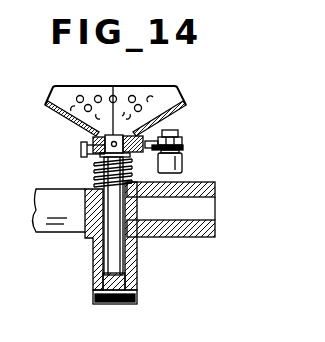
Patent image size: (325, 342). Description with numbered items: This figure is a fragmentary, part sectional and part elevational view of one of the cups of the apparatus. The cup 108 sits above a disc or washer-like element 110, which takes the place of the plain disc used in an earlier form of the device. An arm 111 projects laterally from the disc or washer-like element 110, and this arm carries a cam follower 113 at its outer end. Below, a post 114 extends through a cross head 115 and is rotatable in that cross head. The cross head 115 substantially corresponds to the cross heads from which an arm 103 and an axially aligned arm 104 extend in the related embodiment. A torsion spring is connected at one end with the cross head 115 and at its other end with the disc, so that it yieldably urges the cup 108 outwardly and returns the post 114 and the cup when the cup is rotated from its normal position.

The arm 103 is at (181, 238).
The arm 104 is at (61, 237).
The cup 108 is at (186, 82).
The disc or washer-like element 110 is at (93, 141).
The arm 111 is at (160, 133).
The cam follower 113 is at (183, 164).
The post 114 is at (113, 253).
The cross head 115 is at (137, 280).